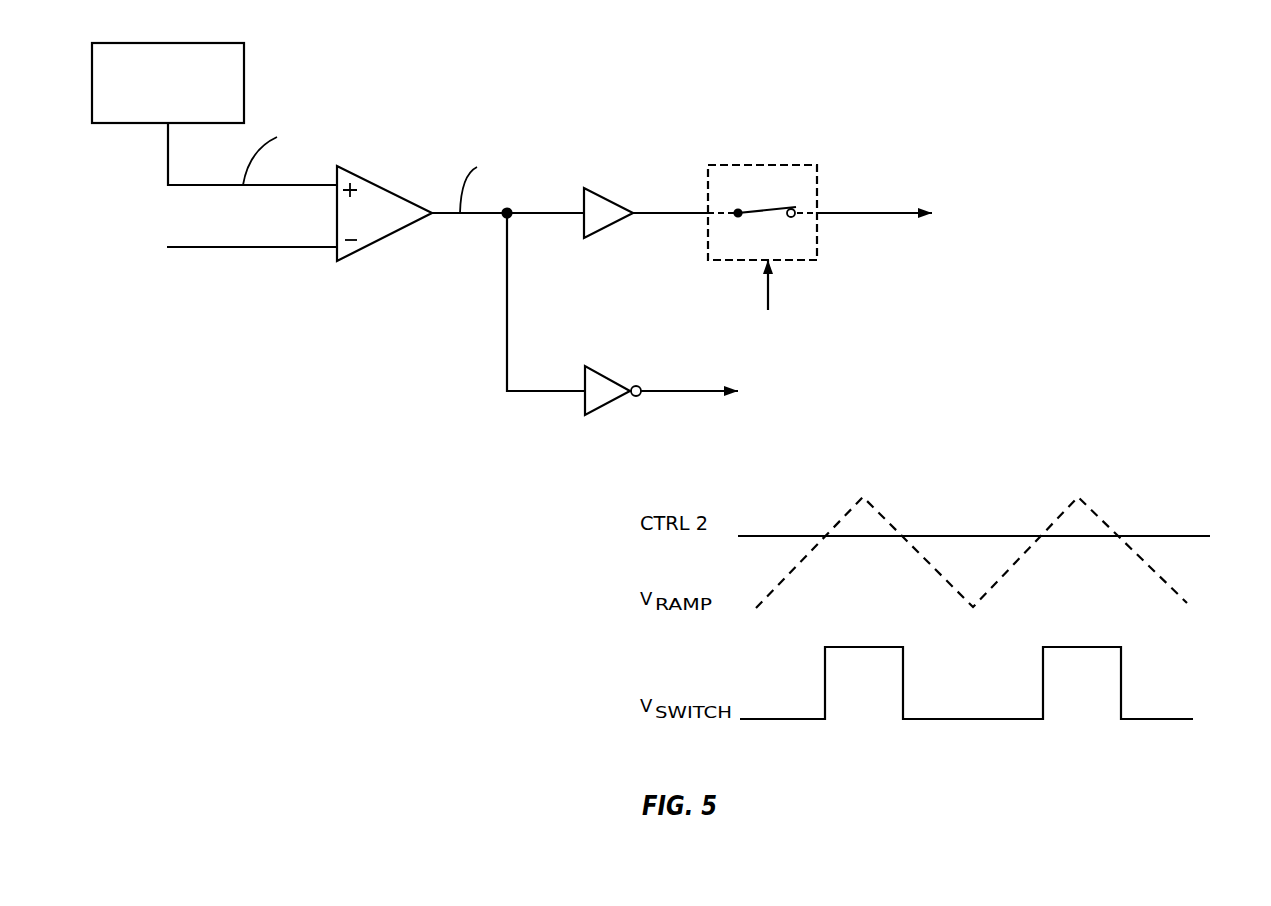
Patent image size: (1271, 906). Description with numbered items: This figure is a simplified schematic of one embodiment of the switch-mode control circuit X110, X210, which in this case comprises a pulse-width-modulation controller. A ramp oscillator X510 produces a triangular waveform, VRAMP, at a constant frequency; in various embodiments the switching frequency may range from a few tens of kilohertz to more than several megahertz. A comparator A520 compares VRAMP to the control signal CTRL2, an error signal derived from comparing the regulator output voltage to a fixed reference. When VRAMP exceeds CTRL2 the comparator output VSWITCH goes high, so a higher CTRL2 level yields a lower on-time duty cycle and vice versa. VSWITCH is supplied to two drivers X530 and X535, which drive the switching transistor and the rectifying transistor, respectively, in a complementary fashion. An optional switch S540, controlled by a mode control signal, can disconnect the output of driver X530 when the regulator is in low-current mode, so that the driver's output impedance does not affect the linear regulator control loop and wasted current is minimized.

The ramp oscillator X510 is at (168, 83).
The comparator A520 is at (384, 213).
The driver X530 is at (623, 209).
The switch S540 is at (772, 165).
The driver X535 is at (624, 395).
The switch-mode control circuit X110 is at (592, 233).
The PWM control circuit X210 is at (592, 233).